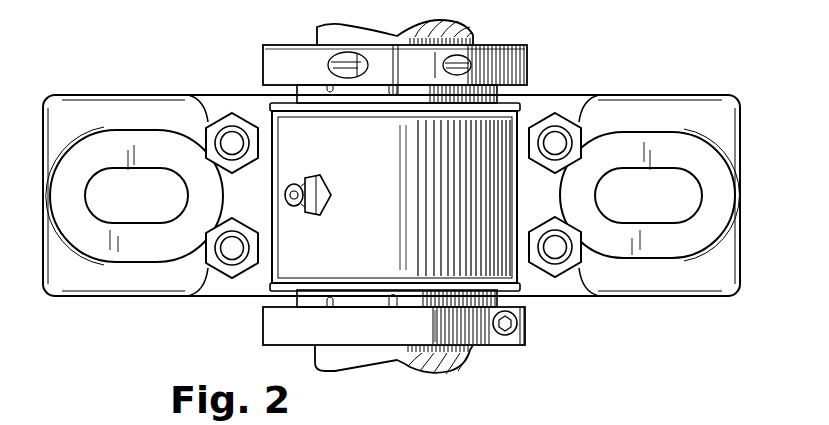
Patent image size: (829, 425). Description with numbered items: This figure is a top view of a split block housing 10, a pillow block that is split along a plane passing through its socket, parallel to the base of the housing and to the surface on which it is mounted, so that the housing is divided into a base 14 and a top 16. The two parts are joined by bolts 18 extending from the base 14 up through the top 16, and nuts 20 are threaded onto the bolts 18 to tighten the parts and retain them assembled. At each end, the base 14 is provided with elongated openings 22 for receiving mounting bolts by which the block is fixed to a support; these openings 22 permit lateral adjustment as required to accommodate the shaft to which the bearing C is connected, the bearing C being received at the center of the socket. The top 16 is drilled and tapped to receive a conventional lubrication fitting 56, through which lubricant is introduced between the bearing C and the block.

The split block housing 10 is at (391, 197).
The base 14 is at (121, 110).
The top 16 is at (363, 256).
The bolts 18 is at (236, 143).
The nuts 20 is at (243, 232).
The elongated openings 22 is at (139, 216).
The lubrication fitting 56 is at (325, 182).
The bearing C is at (262, 292).